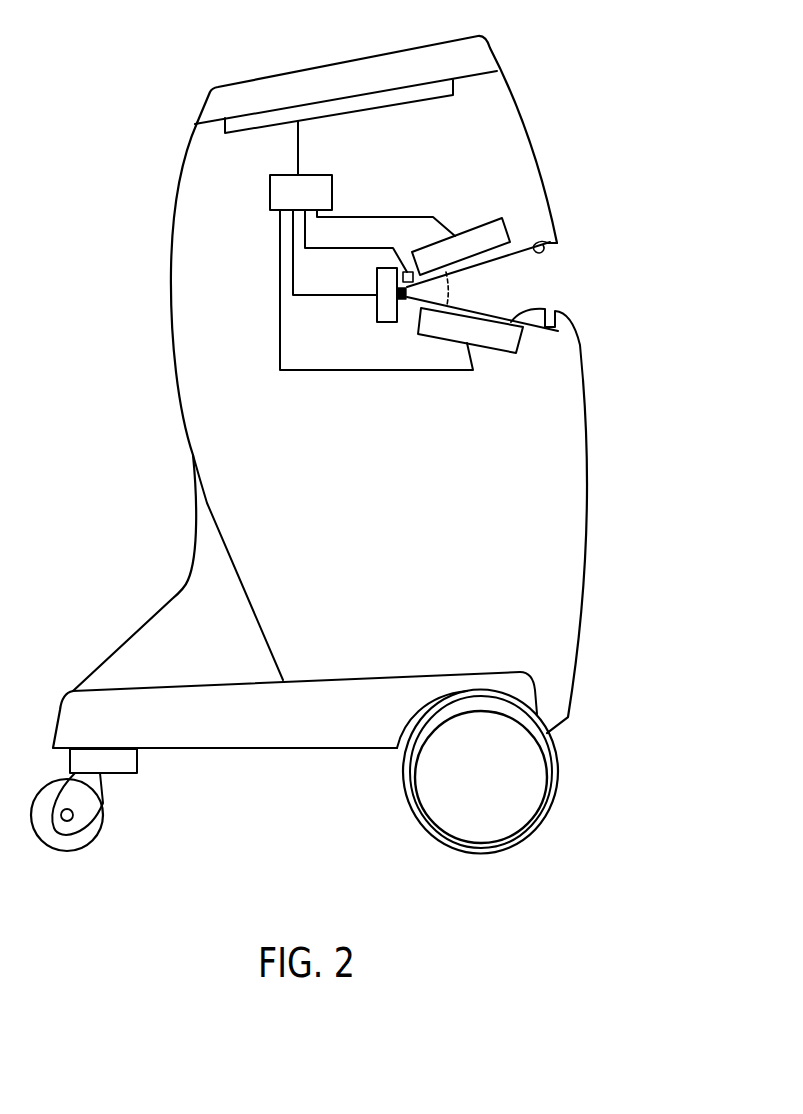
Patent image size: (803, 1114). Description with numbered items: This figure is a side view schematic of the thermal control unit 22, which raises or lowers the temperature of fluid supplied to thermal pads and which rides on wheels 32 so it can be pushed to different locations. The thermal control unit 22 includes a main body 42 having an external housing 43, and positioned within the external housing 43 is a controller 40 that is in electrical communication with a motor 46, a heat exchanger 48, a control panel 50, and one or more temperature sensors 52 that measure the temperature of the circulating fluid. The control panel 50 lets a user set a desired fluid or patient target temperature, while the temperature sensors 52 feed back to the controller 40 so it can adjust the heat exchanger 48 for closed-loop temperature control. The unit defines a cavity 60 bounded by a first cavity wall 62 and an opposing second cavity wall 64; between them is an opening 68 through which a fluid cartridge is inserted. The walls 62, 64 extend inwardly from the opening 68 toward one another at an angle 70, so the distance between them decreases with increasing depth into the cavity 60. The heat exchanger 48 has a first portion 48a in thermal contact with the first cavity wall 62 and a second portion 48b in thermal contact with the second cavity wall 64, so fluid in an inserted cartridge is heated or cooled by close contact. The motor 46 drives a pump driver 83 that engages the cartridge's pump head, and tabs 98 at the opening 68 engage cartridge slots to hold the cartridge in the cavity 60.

The thermal control unit 22 is at (601, 51).
The wheels 32 is at (100, 832).
The controller 40 is at (273, 192).
The main body 42 is at (223, 310).
The external housing 43 is at (182, 397).
The motor 46 is at (382, 312).
The heat exchanger 48 is at (464, 354).
The first portion 48a is at (485, 220).
The second portion 48b is at (505, 355).
The control panel 50 is at (371, 100).
The temperature sensors 52 is at (407, 270).
The cavity 60 is at (528, 292).
The first cavity wall 62 is at (518, 238).
The second cavity wall 64 is at (562, 308).
The opening 68 is at (561, 276).
The angle 70 is at (449, 288).
The pump driver 83 is at (407, 302).
The tabs 98 is at (540, 252).